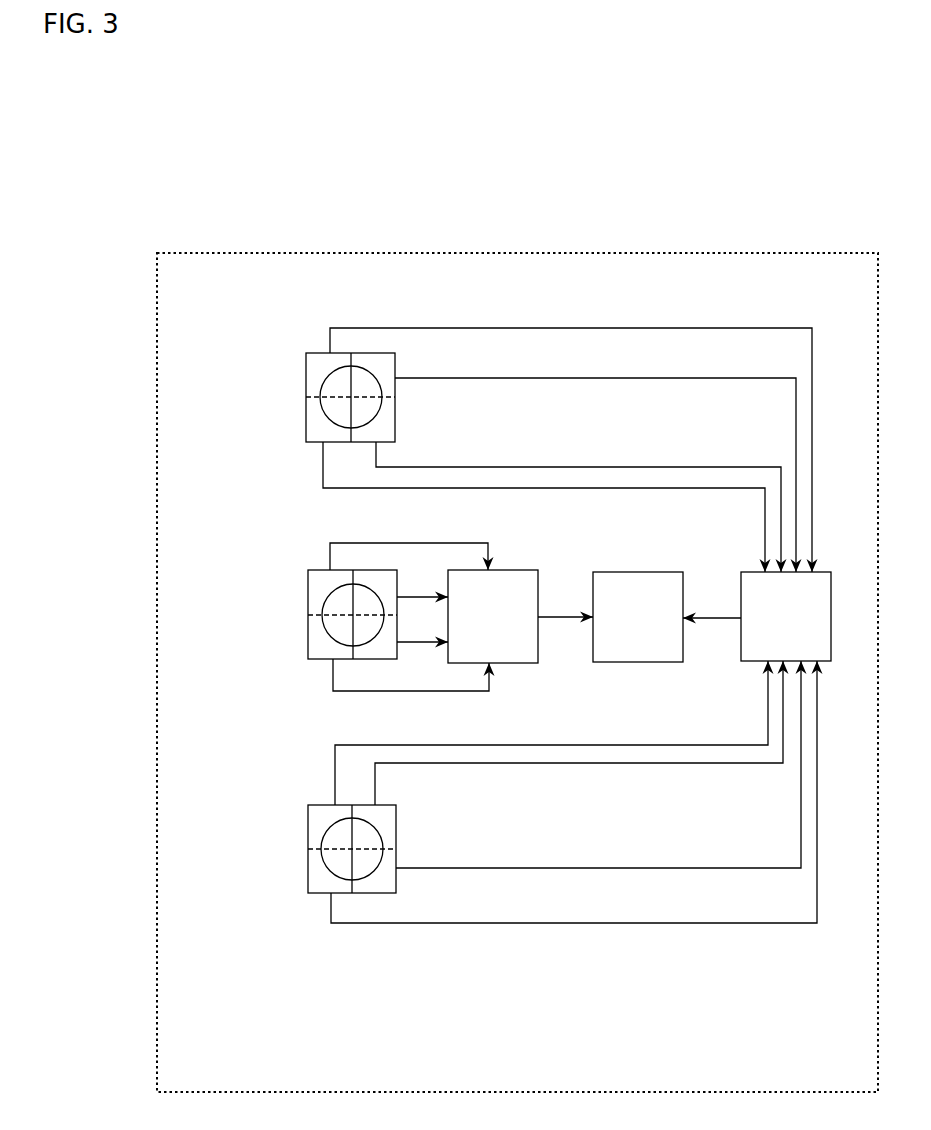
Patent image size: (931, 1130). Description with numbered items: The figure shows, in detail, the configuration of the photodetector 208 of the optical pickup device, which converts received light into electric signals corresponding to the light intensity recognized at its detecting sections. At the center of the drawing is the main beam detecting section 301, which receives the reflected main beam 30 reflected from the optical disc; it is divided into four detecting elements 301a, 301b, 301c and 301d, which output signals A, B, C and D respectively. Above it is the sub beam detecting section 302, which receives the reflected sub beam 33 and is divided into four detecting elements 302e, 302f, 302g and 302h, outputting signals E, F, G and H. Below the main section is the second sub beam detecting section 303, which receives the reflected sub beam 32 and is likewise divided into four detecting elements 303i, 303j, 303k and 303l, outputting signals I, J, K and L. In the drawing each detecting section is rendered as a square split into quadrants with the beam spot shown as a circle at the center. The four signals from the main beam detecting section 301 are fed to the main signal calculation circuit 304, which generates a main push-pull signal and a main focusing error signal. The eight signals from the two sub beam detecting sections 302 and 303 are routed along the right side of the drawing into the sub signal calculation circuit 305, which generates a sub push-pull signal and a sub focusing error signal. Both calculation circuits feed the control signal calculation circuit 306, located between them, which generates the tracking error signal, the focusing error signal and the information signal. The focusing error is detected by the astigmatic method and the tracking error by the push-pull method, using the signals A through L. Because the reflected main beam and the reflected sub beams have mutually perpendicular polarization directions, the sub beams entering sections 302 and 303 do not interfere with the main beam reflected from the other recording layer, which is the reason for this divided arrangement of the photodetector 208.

The photodetector 208 is at (596, 248).
The sub beam detecting section 302 is at (338, 359).
The detecting element 302e is at (322, 365).
The detecting element 302f is at (393, 358).
The detecting element 302g is at (313, 432).
The detecting element 302h is at (393, 425).
The reflected sub beam 33 is at (314, 403).
The main beam detecting section 301 is at (332, 602).
The detecting element 301a is at (320, 587).
The detecting element 301b is at (373, 578).
The detecting element 301c is at (382, 648).
The detecting element 301d is at (318, 650).
The reflected main beam 30 is at (327, 623).
The sub beam detecting section 303 is at (349, 871).
The detecting element 303i is at (313, 815).
The detecting element 303j is at (393, 818).
The detecting element 303k is at (325, 887).
The detecting element 303l is at (393, 883).
The reflected sub beam 32 is at (318, 862).
The main signal calculation circuit 304 is at (528, 577).
The sub signal calculation circuit 305 is at (740, 662).
The control signal calculation circuit 306 is at (645, 580).